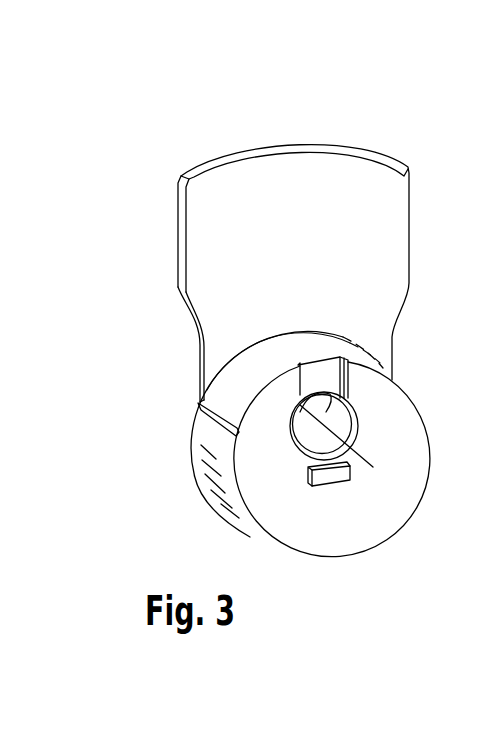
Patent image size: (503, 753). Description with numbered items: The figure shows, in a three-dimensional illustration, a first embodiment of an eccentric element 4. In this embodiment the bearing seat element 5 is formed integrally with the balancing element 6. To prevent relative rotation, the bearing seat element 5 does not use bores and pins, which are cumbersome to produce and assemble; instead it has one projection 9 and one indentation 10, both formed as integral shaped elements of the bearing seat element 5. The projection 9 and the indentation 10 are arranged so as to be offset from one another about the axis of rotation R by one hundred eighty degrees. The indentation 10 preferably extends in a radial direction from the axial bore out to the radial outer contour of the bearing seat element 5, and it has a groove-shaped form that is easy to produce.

The eccentric element 4 is at (162, 410).
The bearing seat element 5 is at (377, 498).
The balancing element 6 is at (303, 175).
The projection 9 is at (330, 480).
The indentation 10 is at (317, 368).
The axis of rotation R is at (372, 462).